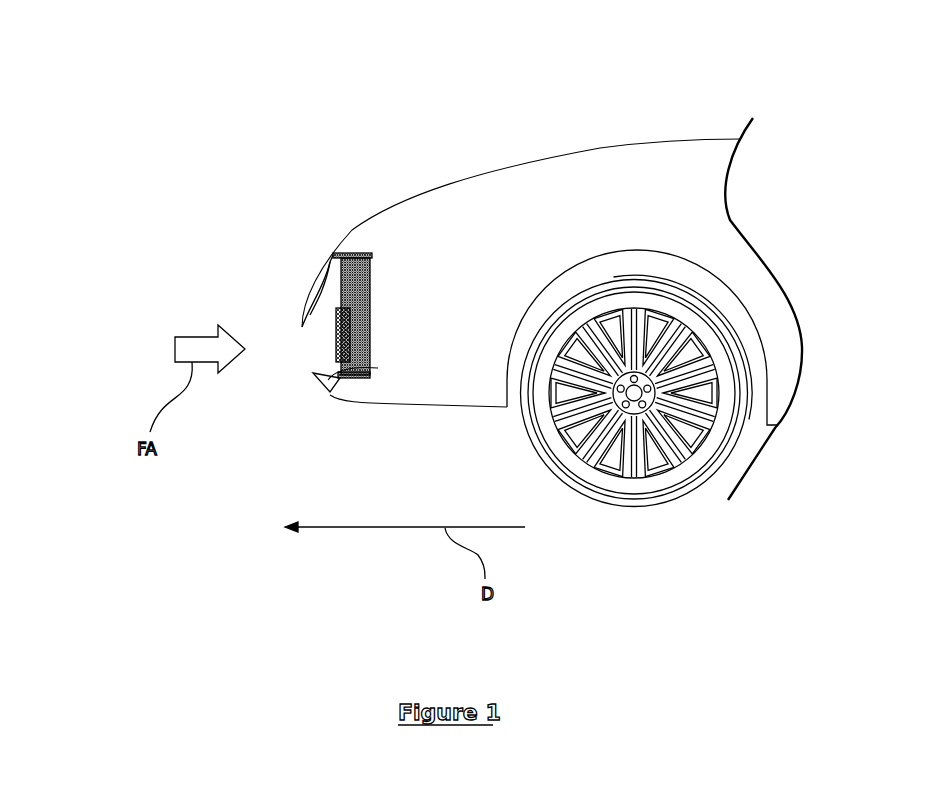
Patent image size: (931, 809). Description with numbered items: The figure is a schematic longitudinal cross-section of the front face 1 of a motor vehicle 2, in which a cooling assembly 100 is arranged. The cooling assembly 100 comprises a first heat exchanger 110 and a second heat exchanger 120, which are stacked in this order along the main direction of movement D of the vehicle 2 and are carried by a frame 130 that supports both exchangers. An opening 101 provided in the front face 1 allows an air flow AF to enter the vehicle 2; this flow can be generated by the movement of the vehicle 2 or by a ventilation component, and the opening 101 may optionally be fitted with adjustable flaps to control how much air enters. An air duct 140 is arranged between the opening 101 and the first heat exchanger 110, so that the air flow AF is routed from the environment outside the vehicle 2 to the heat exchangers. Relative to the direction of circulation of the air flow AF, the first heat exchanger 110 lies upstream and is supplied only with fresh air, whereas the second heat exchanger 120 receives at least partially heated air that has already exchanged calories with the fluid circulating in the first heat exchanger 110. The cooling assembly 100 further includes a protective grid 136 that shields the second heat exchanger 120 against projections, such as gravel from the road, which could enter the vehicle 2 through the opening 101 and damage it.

The front face 1 is at (369, 206).
The motor vehicle 2 is at (577, 108).
The cooling assembly 100 is at (356, 388).
The opening 101 is at (293, 358).
The first heat exchanger 110 is at (340, 266).
The second heat exchanger 120 is at (370, 357).
The frame 130 is at (353, 253).
The protective grid 136 is at (337, 374).
The air duct 140 is at (318, 305).